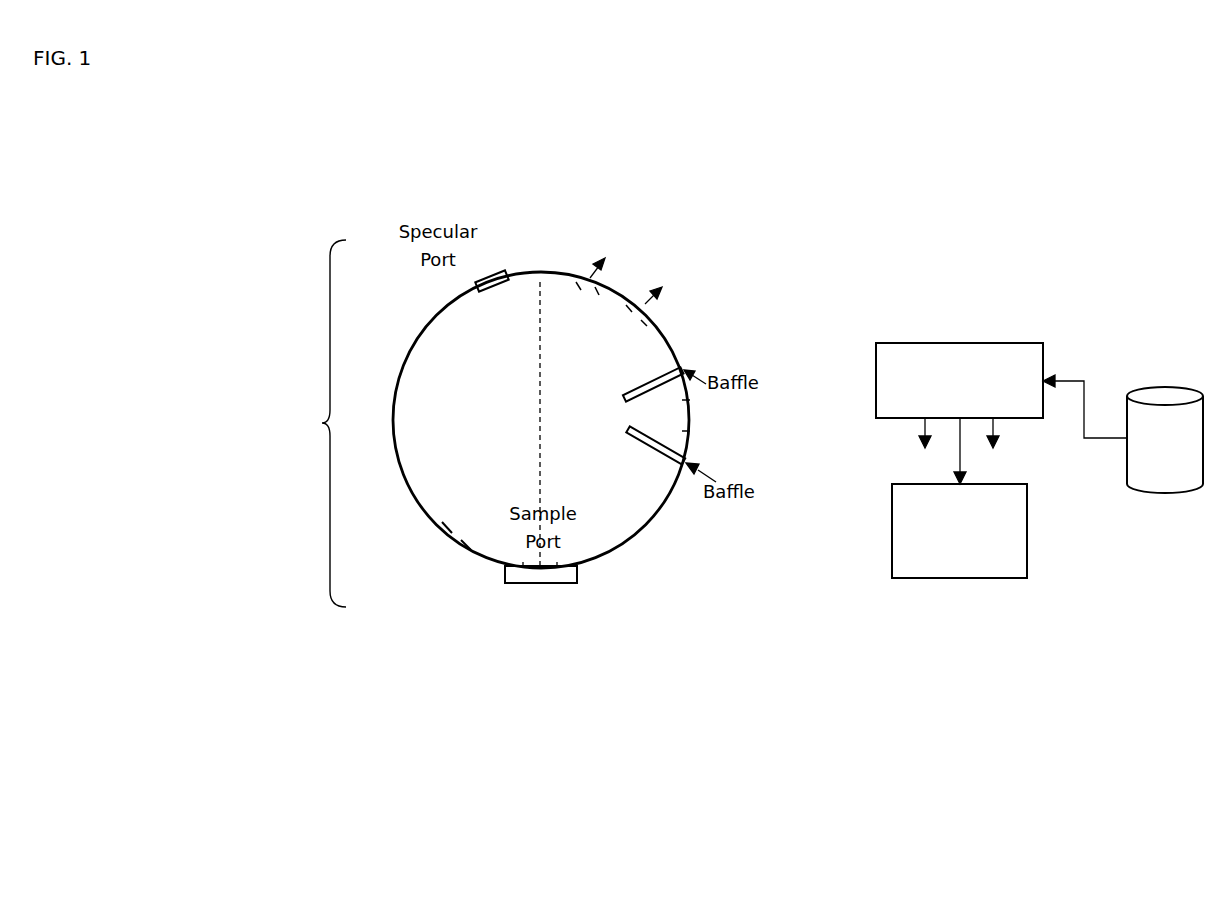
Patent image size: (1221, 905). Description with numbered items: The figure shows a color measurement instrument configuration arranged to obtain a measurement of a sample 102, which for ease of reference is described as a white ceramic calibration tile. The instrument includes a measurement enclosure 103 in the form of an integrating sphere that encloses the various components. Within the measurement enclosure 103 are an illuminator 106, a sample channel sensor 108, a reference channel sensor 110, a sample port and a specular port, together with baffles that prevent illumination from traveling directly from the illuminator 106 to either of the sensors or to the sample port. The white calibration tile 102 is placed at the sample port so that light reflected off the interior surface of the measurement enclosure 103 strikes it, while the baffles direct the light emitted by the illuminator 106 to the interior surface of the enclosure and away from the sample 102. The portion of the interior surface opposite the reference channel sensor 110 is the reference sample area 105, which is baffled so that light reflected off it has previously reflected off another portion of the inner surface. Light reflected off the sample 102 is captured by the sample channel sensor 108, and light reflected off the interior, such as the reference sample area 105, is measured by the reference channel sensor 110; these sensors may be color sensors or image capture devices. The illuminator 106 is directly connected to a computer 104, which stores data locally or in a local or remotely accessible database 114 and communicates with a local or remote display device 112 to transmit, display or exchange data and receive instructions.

The sample 102 is at (545, 603).
The measurement enclosure 103 is at (321, 423).
The computer 104 is at (959, 413).
The reference sample area 105 is at (442, 541).
The illuminator 106 is at (876, 380).
The sample channel sensor 108 is at (976, 330).
The reference channel sensor 110 is at (946, 330).
The display device 112 is at (959, 531).
The database 114 is at (1123, 434).